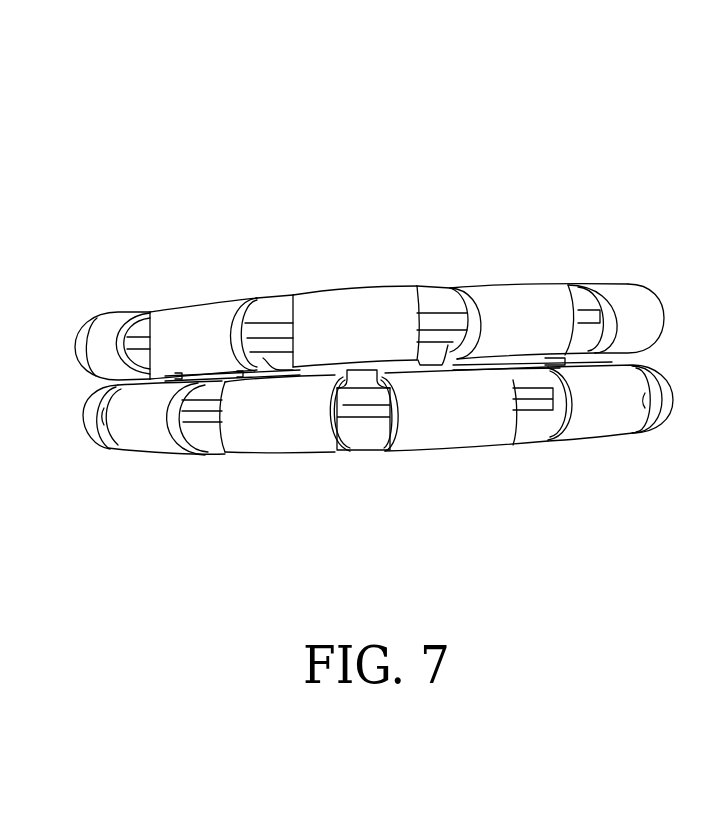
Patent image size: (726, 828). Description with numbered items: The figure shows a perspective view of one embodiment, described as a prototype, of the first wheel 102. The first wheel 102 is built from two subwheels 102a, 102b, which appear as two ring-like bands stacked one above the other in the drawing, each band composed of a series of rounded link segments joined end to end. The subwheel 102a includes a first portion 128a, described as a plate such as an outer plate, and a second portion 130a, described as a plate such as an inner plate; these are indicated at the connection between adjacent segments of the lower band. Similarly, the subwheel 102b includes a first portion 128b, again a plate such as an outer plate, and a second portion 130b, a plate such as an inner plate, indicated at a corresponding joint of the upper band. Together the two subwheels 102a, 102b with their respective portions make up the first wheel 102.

The first wheel 102 is at (398, 148).
The subwheel 102a is at (460, 490).
The subwheel 102b is at (313, 259).
The first portion 128a is at (375, 438).
The first portion 128b is at (437, 297).
The second portion 130a is at (345, 405).
The second portion 130b is at (430, 328).